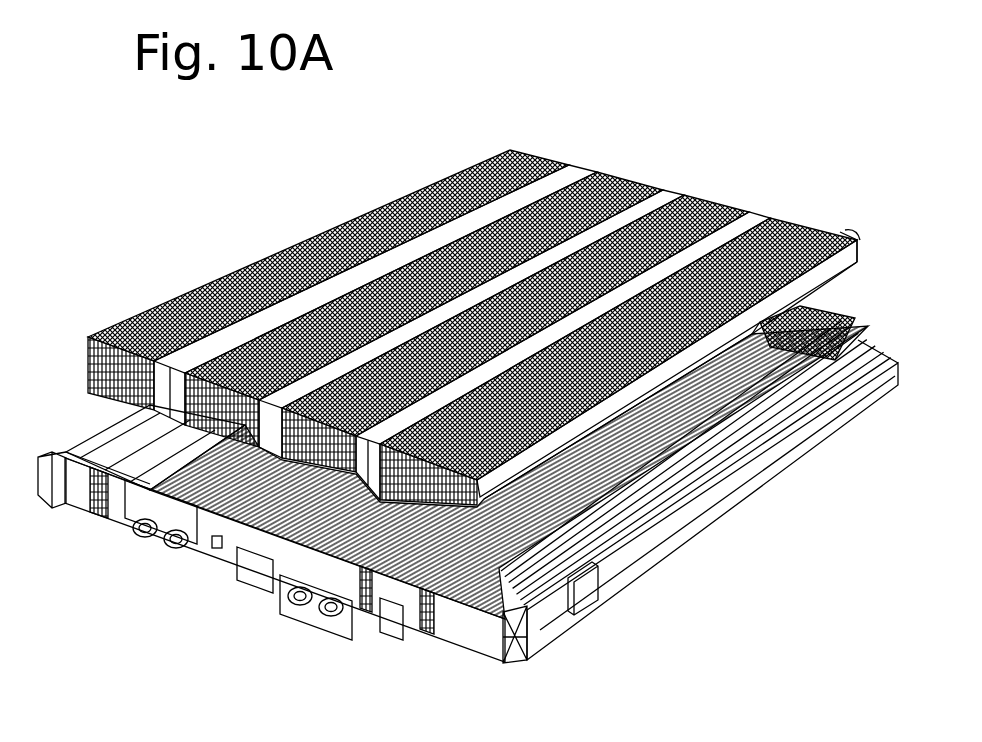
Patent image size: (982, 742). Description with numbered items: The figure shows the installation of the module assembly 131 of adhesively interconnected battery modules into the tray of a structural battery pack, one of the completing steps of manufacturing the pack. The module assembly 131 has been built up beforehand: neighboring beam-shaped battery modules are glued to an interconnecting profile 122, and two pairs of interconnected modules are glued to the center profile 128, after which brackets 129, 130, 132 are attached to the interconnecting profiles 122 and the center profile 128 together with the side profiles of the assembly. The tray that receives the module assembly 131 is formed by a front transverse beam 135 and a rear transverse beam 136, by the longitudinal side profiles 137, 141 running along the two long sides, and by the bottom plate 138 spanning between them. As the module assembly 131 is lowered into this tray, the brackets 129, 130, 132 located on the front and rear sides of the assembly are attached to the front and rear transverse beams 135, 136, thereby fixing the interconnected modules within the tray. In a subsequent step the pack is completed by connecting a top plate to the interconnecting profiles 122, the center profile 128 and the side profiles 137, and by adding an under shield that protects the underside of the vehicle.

The interconnecting profile 122 is at (243, 333).
The center profile 128 is at (405, 322).
The bracket 129 is at (464, 470).
The bracket 130 is at (358, 478).
The module assembly 131 is at (474, 403).
The bracket 132 is at (480, 483).
The front transverse beam 135 is at (283, 585).
The rear transverse beam 136 is at (833, 330).
The longitudinal side profile 137 is at (610, 567).
The bottom plate 138 is at (690, 455).
The longitudinal side profile 141 is at (140, 463).